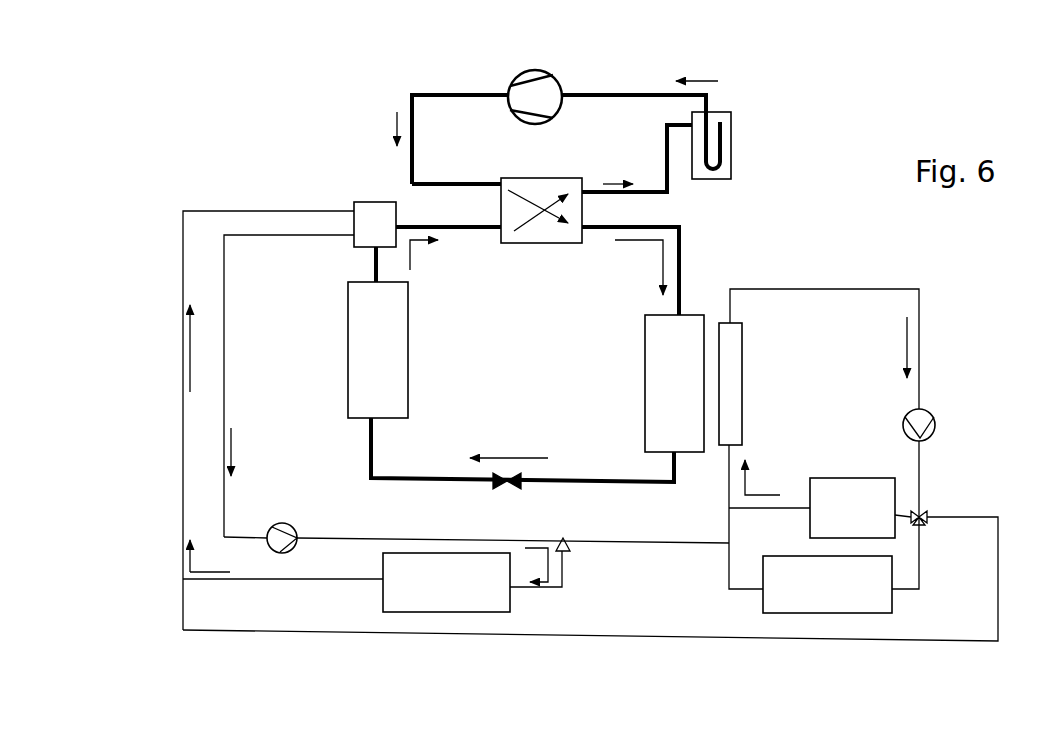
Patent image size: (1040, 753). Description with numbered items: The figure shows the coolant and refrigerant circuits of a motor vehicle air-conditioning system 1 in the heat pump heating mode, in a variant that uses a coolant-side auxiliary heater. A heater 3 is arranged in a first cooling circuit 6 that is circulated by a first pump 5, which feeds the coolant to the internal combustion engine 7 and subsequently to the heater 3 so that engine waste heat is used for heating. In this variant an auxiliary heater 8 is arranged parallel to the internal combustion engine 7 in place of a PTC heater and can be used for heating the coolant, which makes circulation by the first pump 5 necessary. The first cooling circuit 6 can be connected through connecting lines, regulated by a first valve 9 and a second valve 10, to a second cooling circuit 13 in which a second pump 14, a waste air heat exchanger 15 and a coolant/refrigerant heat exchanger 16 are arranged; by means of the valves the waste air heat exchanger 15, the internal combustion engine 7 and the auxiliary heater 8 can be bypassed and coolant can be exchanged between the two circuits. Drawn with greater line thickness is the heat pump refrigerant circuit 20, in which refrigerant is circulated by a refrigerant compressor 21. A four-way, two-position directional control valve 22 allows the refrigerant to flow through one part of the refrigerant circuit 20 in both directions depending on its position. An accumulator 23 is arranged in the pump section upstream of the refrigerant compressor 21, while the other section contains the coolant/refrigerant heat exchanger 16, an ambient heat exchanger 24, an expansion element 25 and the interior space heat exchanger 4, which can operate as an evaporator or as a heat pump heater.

The motor vehicle air-conditioning system 1 is at (789, 218).
The heater 3 is at (733, 355).
The interior space heat exchanger 4 is at (685, 396).
The first pump 5 is at (918, 417).
The first cooling circuit 6 is at (912, 320).
The internal combustion engine 7 is at (835, 598).
The auxiliary heater 8 is at (859, 522).
The first valve 9 is at (923, 512).
The second valve 10 is at (568, 549).
The second cooling circuit 13 is at (258, 486).
The second pump 14 is at (282, 538).
The waste air heat exchanger 15 is at (462, 598).
The coolant/refrigerant heat exchanger 16 is at (373, 223).
The heat pump refrigerant circuit 20 is at (371, 157).
The refrigerant compressor 21 is at (531, 93).
The 4/2 directional control valve 22 is at (537, 229).
The accumulator 23 is at (722, 139).
The ambient heat exchanger 24 is at (391, 364).
The expansion element 25 is at (508, 483).